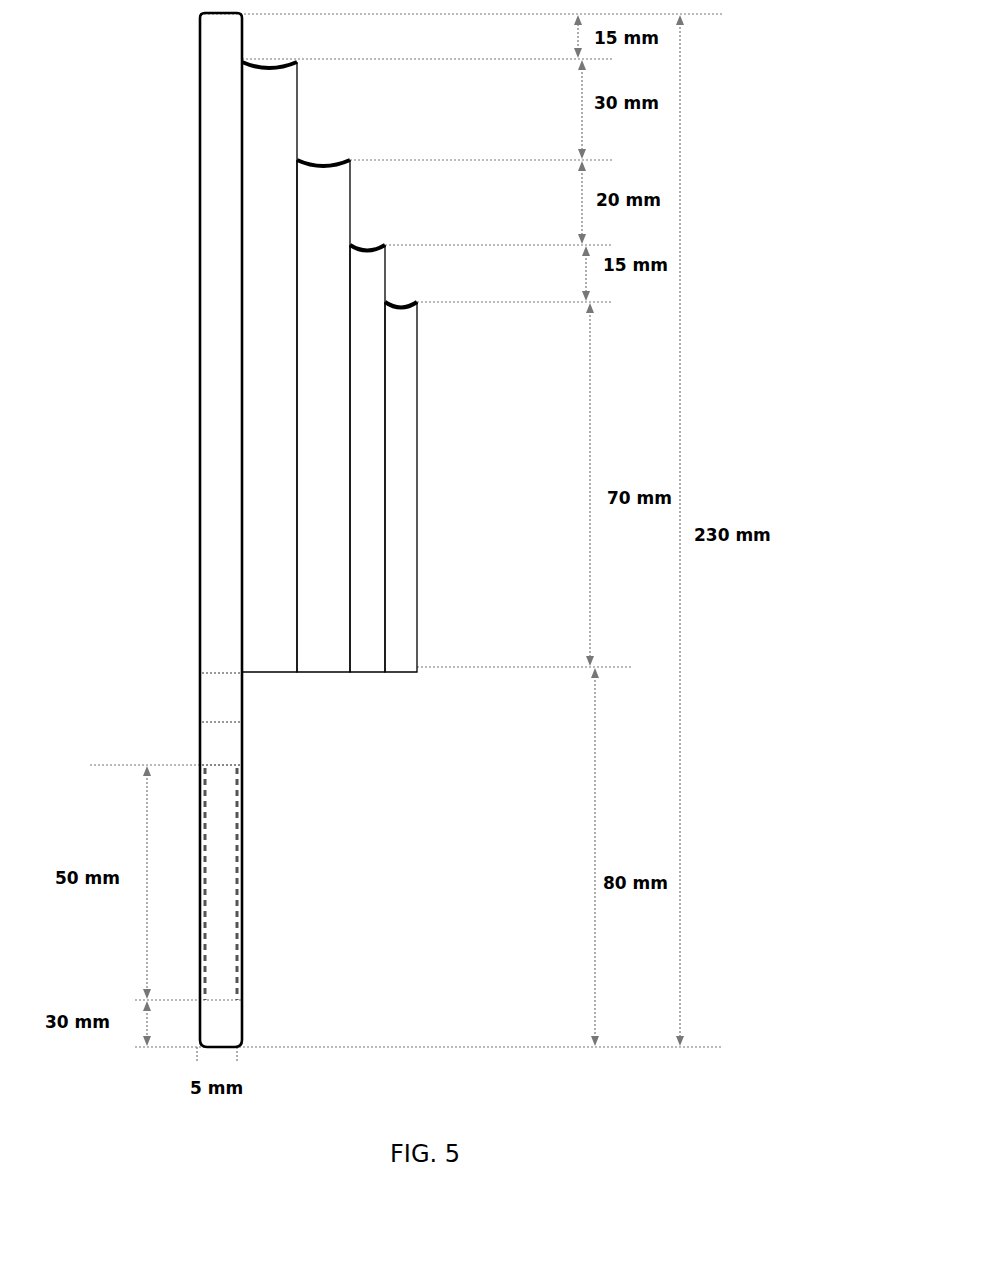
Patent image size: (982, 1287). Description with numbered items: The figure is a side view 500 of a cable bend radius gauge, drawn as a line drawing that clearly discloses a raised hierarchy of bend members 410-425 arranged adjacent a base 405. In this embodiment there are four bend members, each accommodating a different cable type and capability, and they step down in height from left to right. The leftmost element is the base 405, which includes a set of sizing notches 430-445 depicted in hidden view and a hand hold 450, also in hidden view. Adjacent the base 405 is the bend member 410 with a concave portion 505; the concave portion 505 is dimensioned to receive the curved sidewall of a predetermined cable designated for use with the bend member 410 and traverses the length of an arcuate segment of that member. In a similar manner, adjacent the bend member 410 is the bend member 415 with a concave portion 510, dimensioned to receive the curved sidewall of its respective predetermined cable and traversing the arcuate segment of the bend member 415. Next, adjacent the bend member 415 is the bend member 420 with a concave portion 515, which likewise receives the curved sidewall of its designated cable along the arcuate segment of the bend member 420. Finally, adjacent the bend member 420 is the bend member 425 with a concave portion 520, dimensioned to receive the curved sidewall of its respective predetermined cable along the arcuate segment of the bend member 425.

The base 405 is at (222, 57).
The bend member 410 is at (265, 147).
The bend member 415 is at (316, 247).
The bend member 420 is at (367, 343).
The bend member 425 is at (383, 402).
The concave portion 505 is at (275, 57).
The concave portion 510 is at (318, 154).
The concave portion 515 is at (362, 240).
The concave portion 520 is at (397, 296).
The set of sizing notches 430-445 is at (228, 700).
The hand hold 450 is at (222, 862).
The side view 500 is at (803, 126).